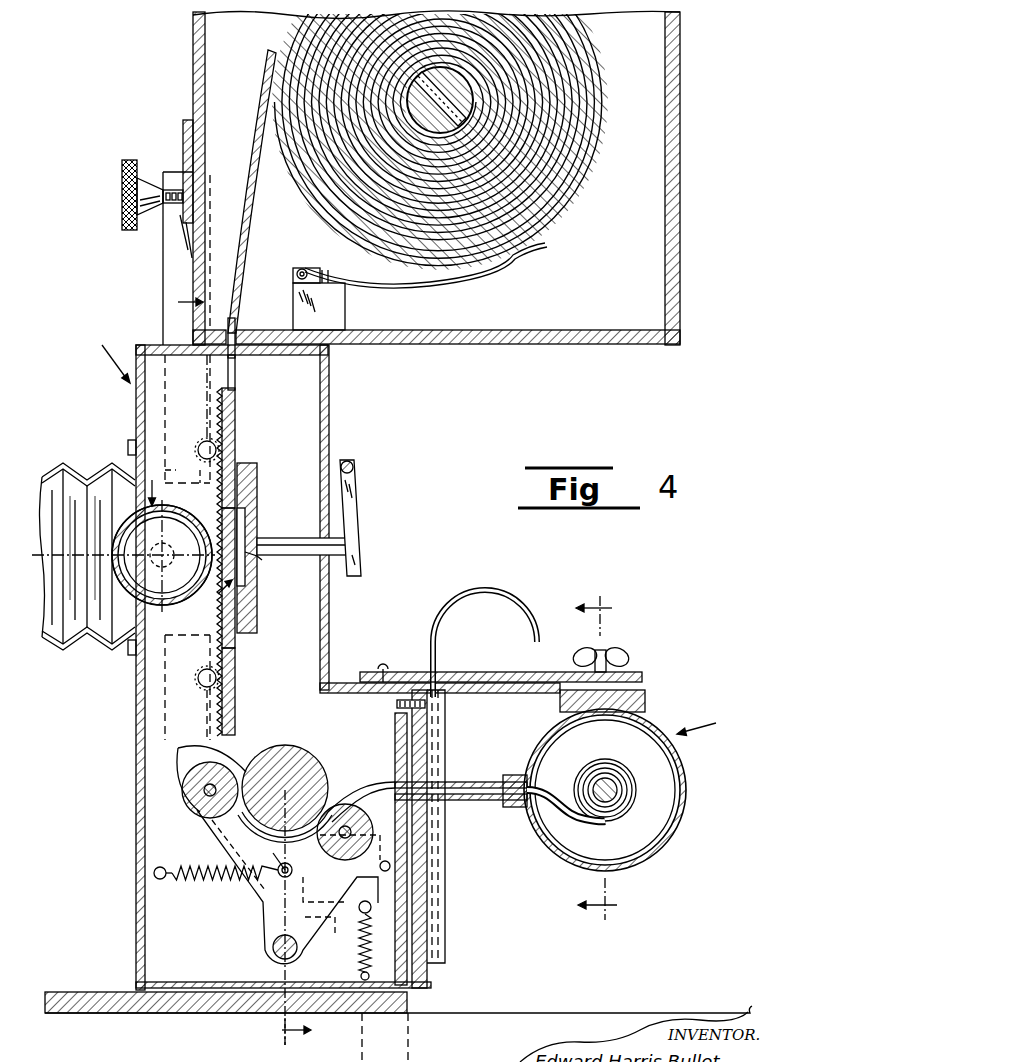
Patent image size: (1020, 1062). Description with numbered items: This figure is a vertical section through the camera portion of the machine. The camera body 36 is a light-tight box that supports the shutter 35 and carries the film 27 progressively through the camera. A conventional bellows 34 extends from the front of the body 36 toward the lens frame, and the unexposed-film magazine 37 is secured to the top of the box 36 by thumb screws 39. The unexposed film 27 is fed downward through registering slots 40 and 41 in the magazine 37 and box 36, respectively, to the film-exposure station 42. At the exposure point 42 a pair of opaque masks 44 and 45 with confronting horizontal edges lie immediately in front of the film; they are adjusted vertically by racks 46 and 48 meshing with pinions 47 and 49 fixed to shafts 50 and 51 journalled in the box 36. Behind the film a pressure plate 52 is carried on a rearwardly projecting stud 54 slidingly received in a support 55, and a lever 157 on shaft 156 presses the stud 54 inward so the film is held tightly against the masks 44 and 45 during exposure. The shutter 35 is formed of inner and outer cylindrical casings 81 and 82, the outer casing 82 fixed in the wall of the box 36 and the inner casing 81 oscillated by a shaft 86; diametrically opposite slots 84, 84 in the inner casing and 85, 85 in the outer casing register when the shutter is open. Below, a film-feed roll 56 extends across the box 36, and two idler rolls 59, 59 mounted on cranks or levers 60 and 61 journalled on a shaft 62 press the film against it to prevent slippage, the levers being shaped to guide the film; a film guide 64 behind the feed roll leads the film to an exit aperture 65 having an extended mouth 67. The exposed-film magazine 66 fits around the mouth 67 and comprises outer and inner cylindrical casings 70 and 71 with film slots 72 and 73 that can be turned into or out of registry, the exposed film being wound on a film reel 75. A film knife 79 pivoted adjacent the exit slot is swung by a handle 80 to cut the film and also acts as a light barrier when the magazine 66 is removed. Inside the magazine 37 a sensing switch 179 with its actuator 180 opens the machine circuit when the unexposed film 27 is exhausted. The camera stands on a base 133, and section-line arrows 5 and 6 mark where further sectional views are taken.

The section line 5- 5 is at (203, 302).
The section line 6- 6 is at (580, 608).
The film 27 is at (257, 262).
The bellows 34 is at (72, 648).
The shutter 35 is at (152, 480).
The body of the camera 36 is at (102, 345).
The unexposed-film magazine 37 is at (585, 345).
The thumb screws 39 is at (147, 192).
The slot 40 is at (236, 333).
The slot 41 is at (236, 370).
The film-exposure station 42 is at (218, 594).
The opaque mask 44 is at (220, 494).
The opaque mask 45 is at (220, 646).
The rack 46 is at (217, 420).
The pinion 47 is at (200, 470).
The rack 48 is at (220, 712).
The pinion 49 is at (206, 700).
The shaft 50 is at (202, 452).
The shaft 51 is at (198, 678).
The pressure plate 52 is at (258, 557).
The stud 54 is at (276, 538).
The support 55 is at (258, 480).
The film-feed roll 56 is at (305, 766).
The idler rolls 59 is at (325, 858).
The crank or lever 60 is at (180, 765).
The crank or lever 61 is at (318, 930).
The shaft 62 is at (271, 952).
The film guide 64 is at (343, 786).
The exit aperture 65 is at (372, 832).
The exposed-film magazine 66 is at (716, 723).
The mouth 67 is at (465, 783).
The outer cylindrical casing 70 is at (652, 860).
The inner cylindrical casing 71 is at (626, 860).
The film slot 72 is at (518, 808).
The film slot 73 is at (538, 786).
The film reel 75 is at (618, 793).
The film knife 79 is at (432, 882).
The handle 80 is at (490, 589).
The inner cylindrical casing 81 is at (166, 564).
The outer cylindrical casing 82 is at (180, 596).
The slots 84 is at (196, 556).
The slots 85 is at (204, 578).
The shaft 86 is at (160, 570).
The base 133 is at (100, 992).
The shaft 156 is at (356, 467).
The lever 157 is at (362, 566).
The switch 179 is at (330, 308).
The actuator 180 is at (488, 283).